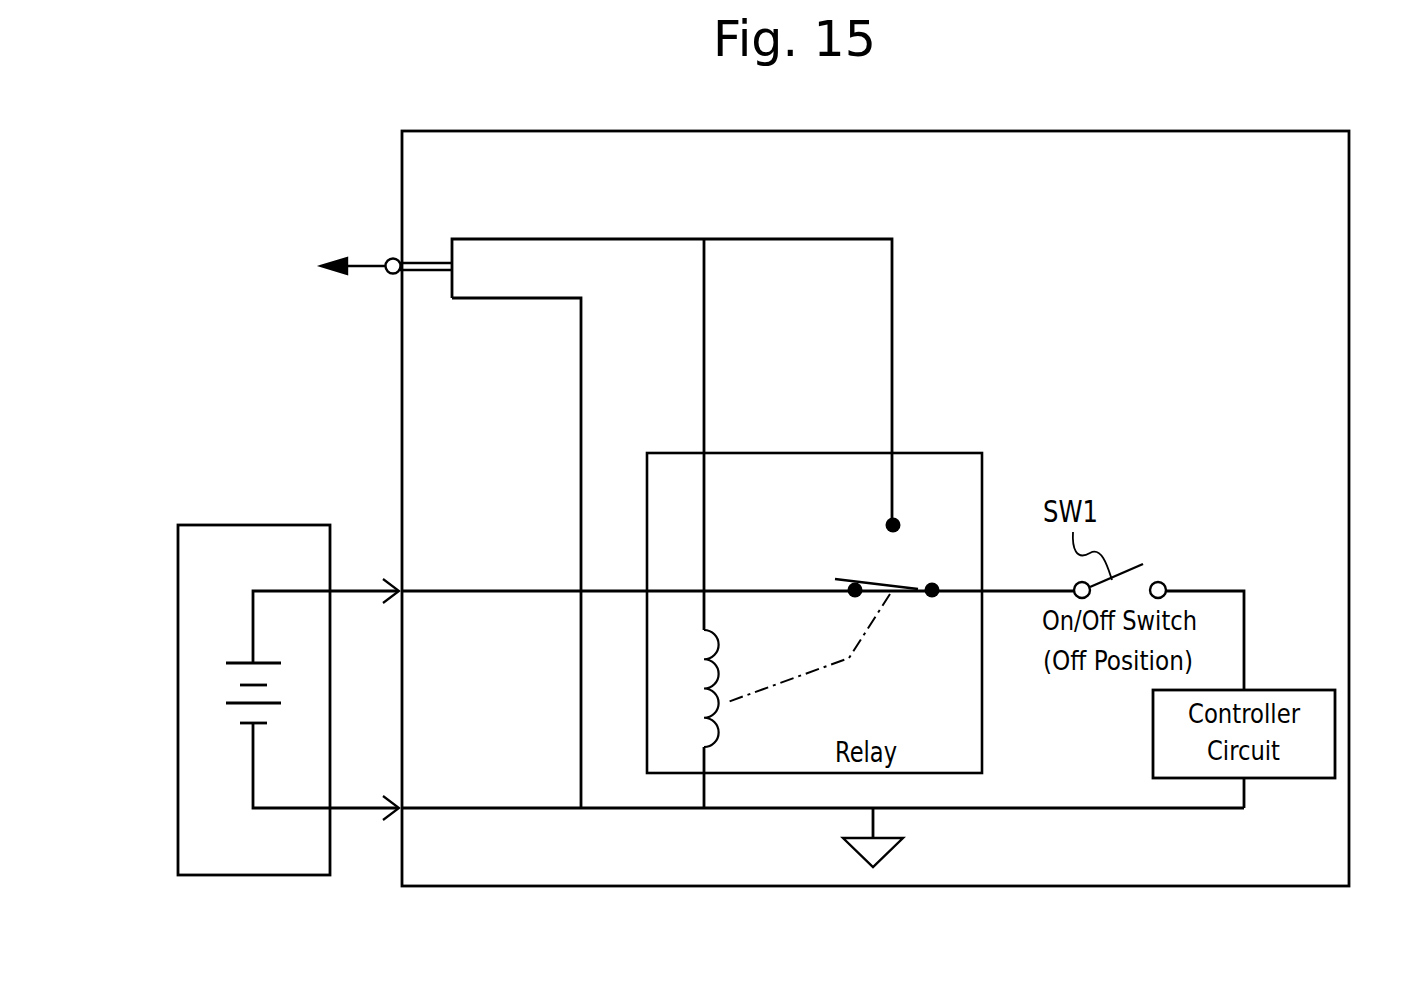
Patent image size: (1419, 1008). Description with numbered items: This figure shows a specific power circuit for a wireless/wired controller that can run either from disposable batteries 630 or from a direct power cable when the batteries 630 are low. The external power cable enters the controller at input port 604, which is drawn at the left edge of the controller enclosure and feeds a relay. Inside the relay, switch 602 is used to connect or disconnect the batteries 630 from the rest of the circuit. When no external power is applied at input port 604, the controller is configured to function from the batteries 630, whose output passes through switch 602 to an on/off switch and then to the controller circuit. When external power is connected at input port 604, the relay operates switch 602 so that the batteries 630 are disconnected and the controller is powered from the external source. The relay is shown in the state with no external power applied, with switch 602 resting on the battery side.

The input port 604 is at (395, 258).
The disposable batteries 630 is at (218, 548).
The switch 602 is at (888, 583).